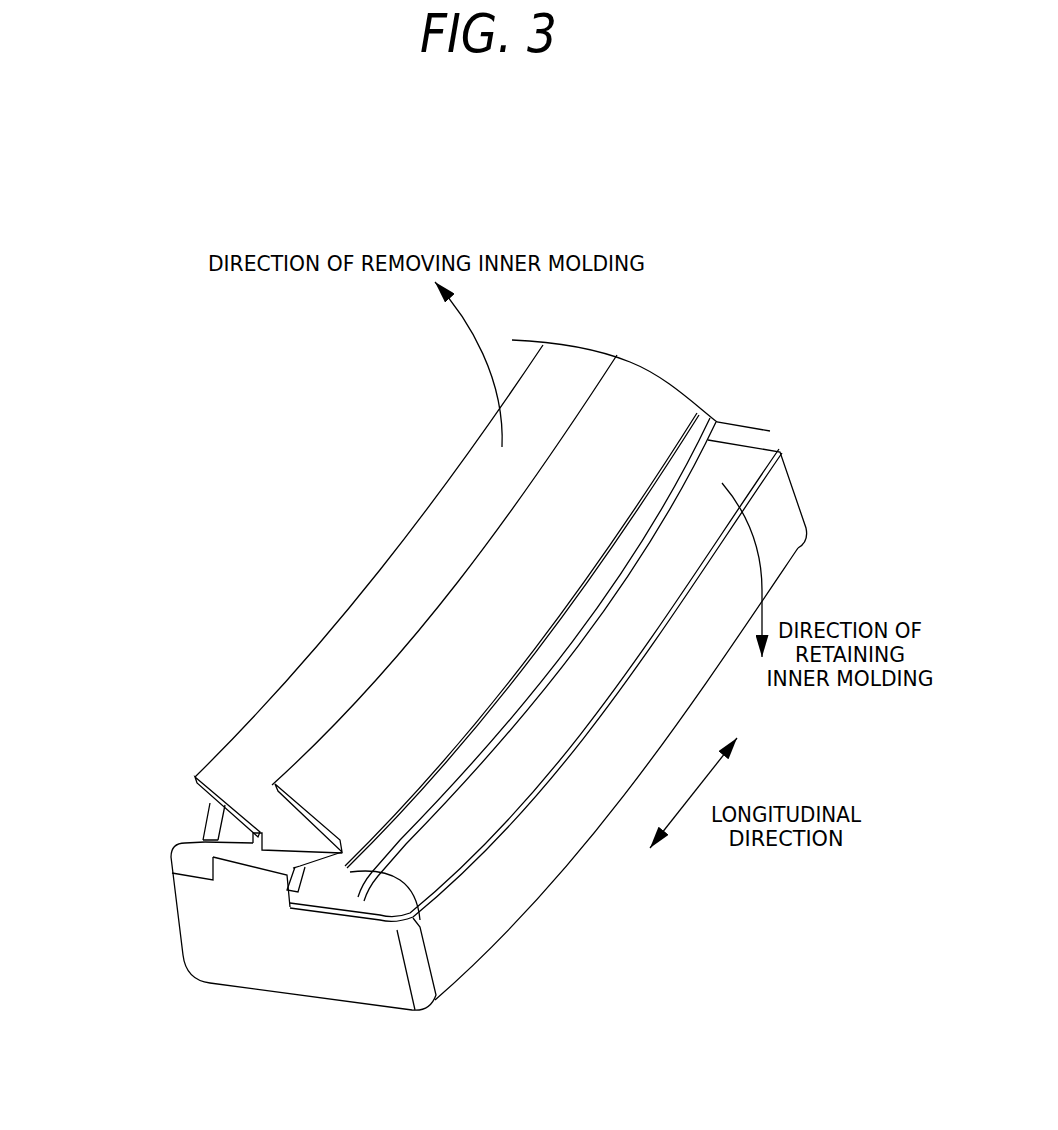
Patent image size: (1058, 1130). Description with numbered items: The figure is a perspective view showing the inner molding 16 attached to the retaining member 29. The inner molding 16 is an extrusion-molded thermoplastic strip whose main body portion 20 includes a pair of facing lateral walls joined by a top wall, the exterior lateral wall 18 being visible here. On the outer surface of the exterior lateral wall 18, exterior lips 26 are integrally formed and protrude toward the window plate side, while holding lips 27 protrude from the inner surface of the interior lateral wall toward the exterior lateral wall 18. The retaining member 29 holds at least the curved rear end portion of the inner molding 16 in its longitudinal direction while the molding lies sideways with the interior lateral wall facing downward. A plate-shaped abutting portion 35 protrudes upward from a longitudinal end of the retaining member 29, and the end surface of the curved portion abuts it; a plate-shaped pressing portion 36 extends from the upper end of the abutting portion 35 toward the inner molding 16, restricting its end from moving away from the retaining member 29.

The inner molding 16 is at (312, 645).
The exterior lips 26 is at (420, 670).
The exterior lateral wall 18 is at (207, 847).
The main body portion 20 is at (228, 826).
The pressing portion 36 is at (205, 858).
The abutting portion 35 is at (293, 888).
The holding lips 27 is at (421, 928).
The retaining member 29 is at (545, 895).